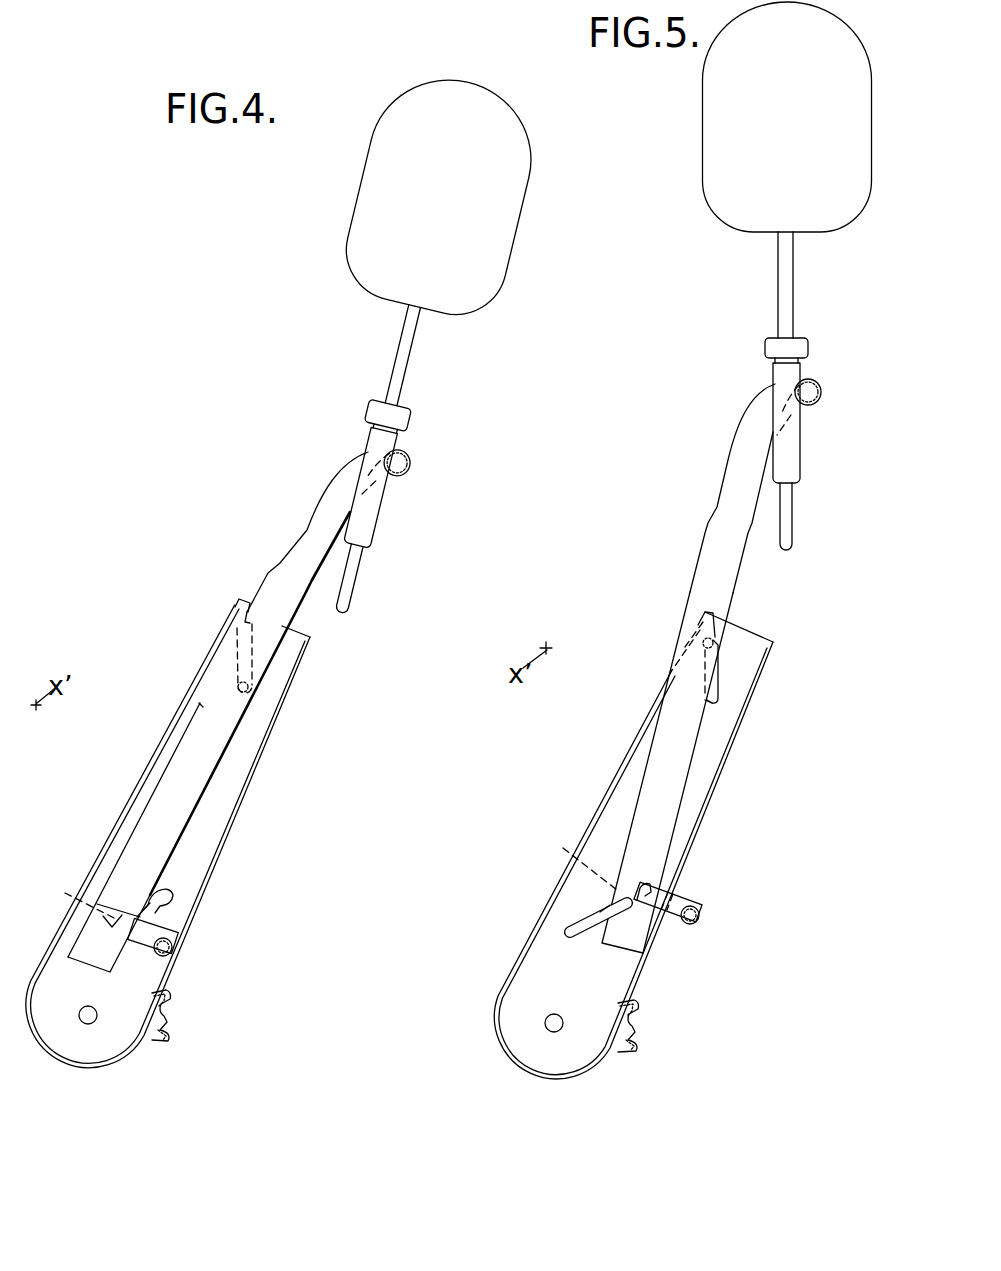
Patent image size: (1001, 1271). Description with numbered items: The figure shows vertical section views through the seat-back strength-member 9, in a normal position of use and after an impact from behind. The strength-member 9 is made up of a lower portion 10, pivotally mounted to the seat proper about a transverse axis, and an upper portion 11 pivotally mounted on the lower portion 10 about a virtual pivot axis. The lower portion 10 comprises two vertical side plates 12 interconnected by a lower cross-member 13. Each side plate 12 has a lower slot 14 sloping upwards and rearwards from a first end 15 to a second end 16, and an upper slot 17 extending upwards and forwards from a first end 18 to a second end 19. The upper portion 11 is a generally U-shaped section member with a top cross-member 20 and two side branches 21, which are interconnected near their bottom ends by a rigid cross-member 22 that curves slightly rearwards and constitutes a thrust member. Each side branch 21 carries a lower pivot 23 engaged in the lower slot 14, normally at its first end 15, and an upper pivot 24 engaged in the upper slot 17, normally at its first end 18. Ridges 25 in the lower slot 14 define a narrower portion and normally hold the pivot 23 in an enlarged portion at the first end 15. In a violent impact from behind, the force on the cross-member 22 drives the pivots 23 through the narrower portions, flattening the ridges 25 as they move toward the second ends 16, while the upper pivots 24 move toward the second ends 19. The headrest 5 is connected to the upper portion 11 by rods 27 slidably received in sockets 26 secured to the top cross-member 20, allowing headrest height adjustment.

In FIG. 4, the headrest 5 is at (410, 118).
In FIG. 5, the headrest 5 is at (738, 123).
In FIG. 4, the rods 27 is at (402, 348).
In FIG. 5, the rods 27 is at (785, 282).
In FIG. 4, the sockets 26 is at (360, 519).
In FIG. 5, the sockets 26 is at (788, 459).
In FIG. 4, the top cross-member 20 is at (410, 452).
In FIG. 5, the top cross-member 20 is at (817, 382).
In FIG. 4, the upper portion 11 is at (327, 467).
In FIG. 5, the upper portion 11 is at (733, 420).
In FIG. 4, the side branches 21 is at (180, 780).
In FIG. 5, the side branches 21 is at (715, 568).
In FIG. 4, the strength-member 9 is at (180, 632).
In FIG. 5, the strength-member 9 is at (610, 672).
In FIG. 4, the lower portion 10 is at (94, 1080).
In FIG. 5, the lower portion 10 is at (597, 1080).
In FIG. 4, the side plates 12 is at (122, 1040).
In FIG. 5, the side plates 12 is at (528, 1048).
In FIG. 4, the second end 19 is at (234, 612).
In FIG. 5, the second end 19 is at (700, 622).
In FIG. 4, the upper slots 17 is at (250, 650).
In FIG. 5, the upper slots 17 is at (718, 678).
In FIG. 4, the upper pivot 24 is at (250, 688).
In FIG. 5, the upper pivot 24 is at (703, 643).
In FIG. 4, the first end 18 is at (233, 697).
In FIG. 5, the first end 18 is at (712, 703).
In FIG. 4, the first end 15 is at (110, 924).
In FIG. 5, the first end 15 is at (566, 932).
In FIG. 4, the lower slots 14 is at (138, 910).
In FIG. 5, the lower slots 14 is at (600, 912).
In FIG. 4, the lower pivot 23 is at (76, 899).
In FIG. 5, the lower pivot 23 is at (582, 856).
In FIG. 4, the second end 16 is at (170, 896).
In FIG. 5, the second end 16 is at (652, 888).
In FIG. 4, the ridges 25 is at (163, 903).
In FIG. 4, the cross-member 22 is at (175, 937).
In FIG. 5, the cross-member 22 is at (697, 923).
In FIG. 4, the lower cross-member 13 is at (166, 1023).
In FIG. 5, the lower cross-member 13 is at (634, 1030).